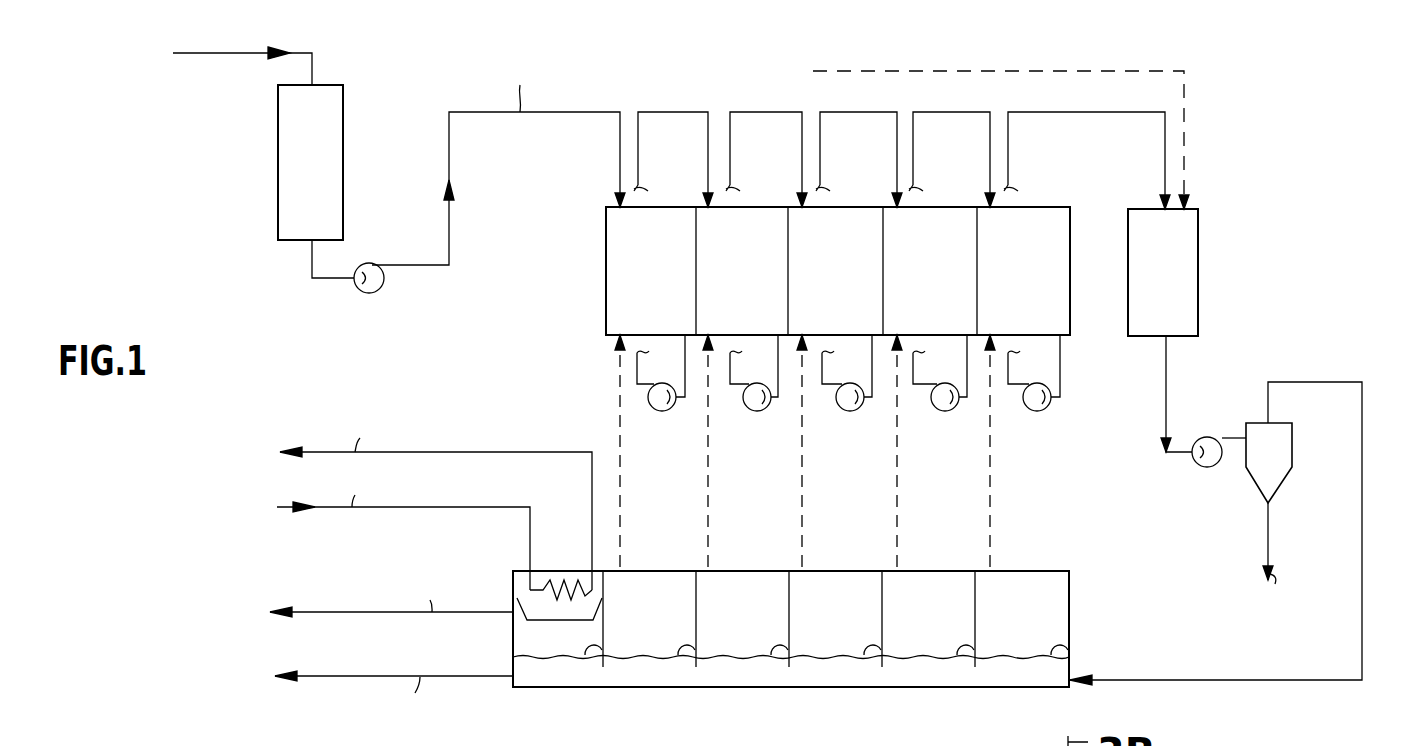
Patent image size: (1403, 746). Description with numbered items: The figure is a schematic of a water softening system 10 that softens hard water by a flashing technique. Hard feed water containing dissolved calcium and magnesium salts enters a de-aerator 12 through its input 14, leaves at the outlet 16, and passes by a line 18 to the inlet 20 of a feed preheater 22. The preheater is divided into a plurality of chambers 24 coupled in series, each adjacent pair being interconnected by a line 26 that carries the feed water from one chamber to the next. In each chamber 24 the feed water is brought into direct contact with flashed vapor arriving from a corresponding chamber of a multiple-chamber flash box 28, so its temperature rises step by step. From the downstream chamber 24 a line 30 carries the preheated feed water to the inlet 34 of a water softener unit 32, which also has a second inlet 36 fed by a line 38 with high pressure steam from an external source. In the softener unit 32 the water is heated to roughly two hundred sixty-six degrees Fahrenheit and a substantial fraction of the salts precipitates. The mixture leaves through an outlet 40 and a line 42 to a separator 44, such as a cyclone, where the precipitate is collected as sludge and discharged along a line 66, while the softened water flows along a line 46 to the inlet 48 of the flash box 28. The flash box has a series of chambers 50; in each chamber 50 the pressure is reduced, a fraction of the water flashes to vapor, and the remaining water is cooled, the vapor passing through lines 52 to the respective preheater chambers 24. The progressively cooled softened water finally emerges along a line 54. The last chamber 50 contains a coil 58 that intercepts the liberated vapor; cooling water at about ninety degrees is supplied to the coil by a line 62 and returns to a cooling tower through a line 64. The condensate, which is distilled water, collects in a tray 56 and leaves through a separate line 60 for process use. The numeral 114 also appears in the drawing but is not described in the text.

The water softening system 10 is at (1249, 223).
The de-aerator 12 is at (343, 122).
The input 14 is at (312, 84).
The outlet 16 is at (310, 242).
The line 18 is at (450, 152).
The inlet 20 is at (615, 205).
The feed preheater 22 is at (590, 299).
The chambers 24 is at (670, 215).
The line 26 is at (745, 112).
The flash box 28 is at (1088, 612).
The line 30 is at (1093, 112).
The water softener unit 32 is at (1198, 268).
The inlet 34 is at (1162, 207).
The second inlet 36 is at (1189, 207).
The line 38 is at (1186, 134).
The outlet 40 is at (1167, 341).
The line 42 is at (1160, 428).
The separator 44 is at (1290, 450).
The line 46 is at (1362, 520).
The inlet 48 is at (1074, 678).
The chambers 50 is at (520, 569).
The lines 52 is at (708, 448).
The line 54 is at (440, 675).
The tray 56 is at (606, 612).
The coil 58 is at (558, 588).
The line 60 is at (380, 613).
The line 62 is at (380, 508).
The line 64 is at (530, 452).
The line 66 is at (1266, 530).
The weir 114 is at (898, 732).